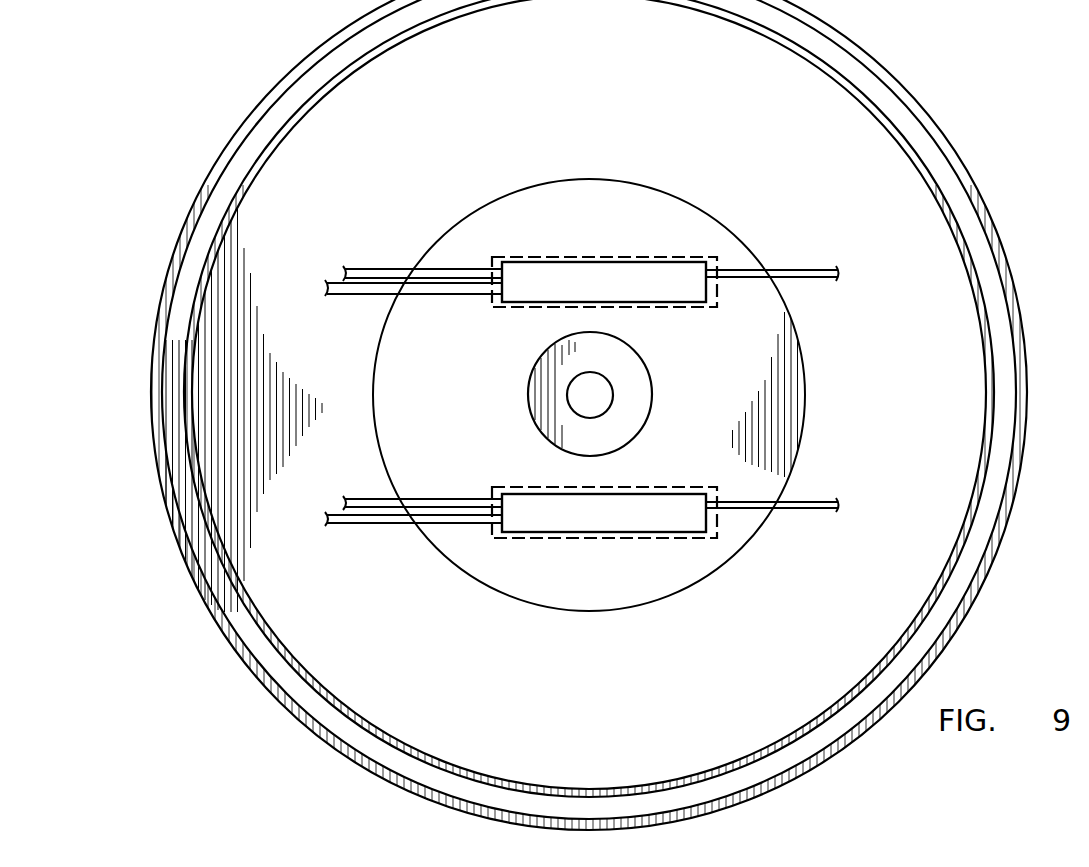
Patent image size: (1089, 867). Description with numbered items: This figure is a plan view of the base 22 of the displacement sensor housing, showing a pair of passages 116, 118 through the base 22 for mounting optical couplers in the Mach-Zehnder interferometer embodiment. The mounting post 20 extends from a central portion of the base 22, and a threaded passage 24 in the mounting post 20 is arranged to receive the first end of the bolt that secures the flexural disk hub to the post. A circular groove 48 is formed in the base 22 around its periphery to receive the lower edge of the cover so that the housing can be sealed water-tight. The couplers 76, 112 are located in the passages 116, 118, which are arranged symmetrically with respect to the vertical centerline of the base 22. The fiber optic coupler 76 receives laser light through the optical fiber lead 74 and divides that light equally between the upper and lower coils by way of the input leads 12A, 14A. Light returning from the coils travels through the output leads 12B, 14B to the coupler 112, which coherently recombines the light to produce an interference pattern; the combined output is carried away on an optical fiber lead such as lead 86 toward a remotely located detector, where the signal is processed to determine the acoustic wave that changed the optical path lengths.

The input lead 12A is at (372, 498).
The output lead 12B is at (373, 268).
The input lead 14A is at (352, 524).
The output lead 14B is at (350, 294).
The mounting post 20 is at (527, 400).
The base 22 is at (150, 412).
The threaded passage 24 is at (567, 403).
The circular groove 48 is at (177, 342).
The optical fiber lead 74 is at (800, 508).
The fiber optic coupler 76 is at (574, 532).
The optical fiber lead 86 is at (783, 270).
The coupler 112 is at (678, 262).
The passage 116 is at (647, 487).
The passage 118 is at (550, 305).